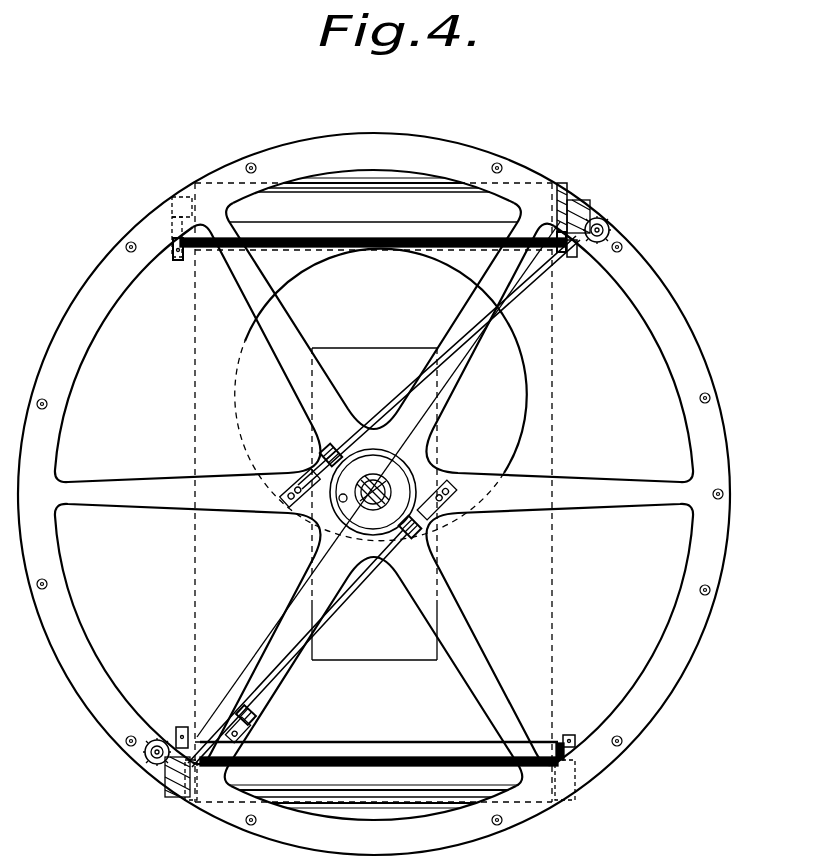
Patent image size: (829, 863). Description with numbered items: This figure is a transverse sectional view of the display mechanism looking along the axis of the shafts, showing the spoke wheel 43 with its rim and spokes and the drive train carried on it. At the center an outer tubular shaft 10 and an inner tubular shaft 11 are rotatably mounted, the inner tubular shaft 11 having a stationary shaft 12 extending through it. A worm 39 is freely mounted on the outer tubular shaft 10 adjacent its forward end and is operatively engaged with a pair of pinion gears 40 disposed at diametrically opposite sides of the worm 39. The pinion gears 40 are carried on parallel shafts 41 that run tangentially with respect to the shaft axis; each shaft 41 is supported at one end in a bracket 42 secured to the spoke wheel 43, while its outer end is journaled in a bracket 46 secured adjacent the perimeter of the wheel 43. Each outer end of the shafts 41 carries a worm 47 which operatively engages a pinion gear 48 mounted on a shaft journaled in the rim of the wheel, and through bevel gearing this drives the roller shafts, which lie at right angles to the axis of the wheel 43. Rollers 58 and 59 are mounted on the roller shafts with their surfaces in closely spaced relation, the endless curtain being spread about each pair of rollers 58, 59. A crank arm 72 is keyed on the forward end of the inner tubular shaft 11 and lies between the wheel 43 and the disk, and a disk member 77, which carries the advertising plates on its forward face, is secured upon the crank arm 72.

The outer tubular shaft 10 is at (438, 464).
The inner tubular shaft 11 is at (392, 488).
The stationary shaft 12 is at (378, 479).
The worm 39 is at (381, 462).
The pinion gears 40 is at (328, 452).
The parallel shafts 41 is at (405, 385).
The brackets 42 is at (300, 480).
The spoke wheel 43 is at (181, 499).
The brackets 46 is at (160, 766).
The worms 47 is at (586, 222).
The pinion gears 48 is at (612, 236).
The rollers 58 is at (456, 231).
The rollers 59 is at (400, 192).
The crank arm 72 is at (350, 662).
The disk member 77 is at (515, 390).